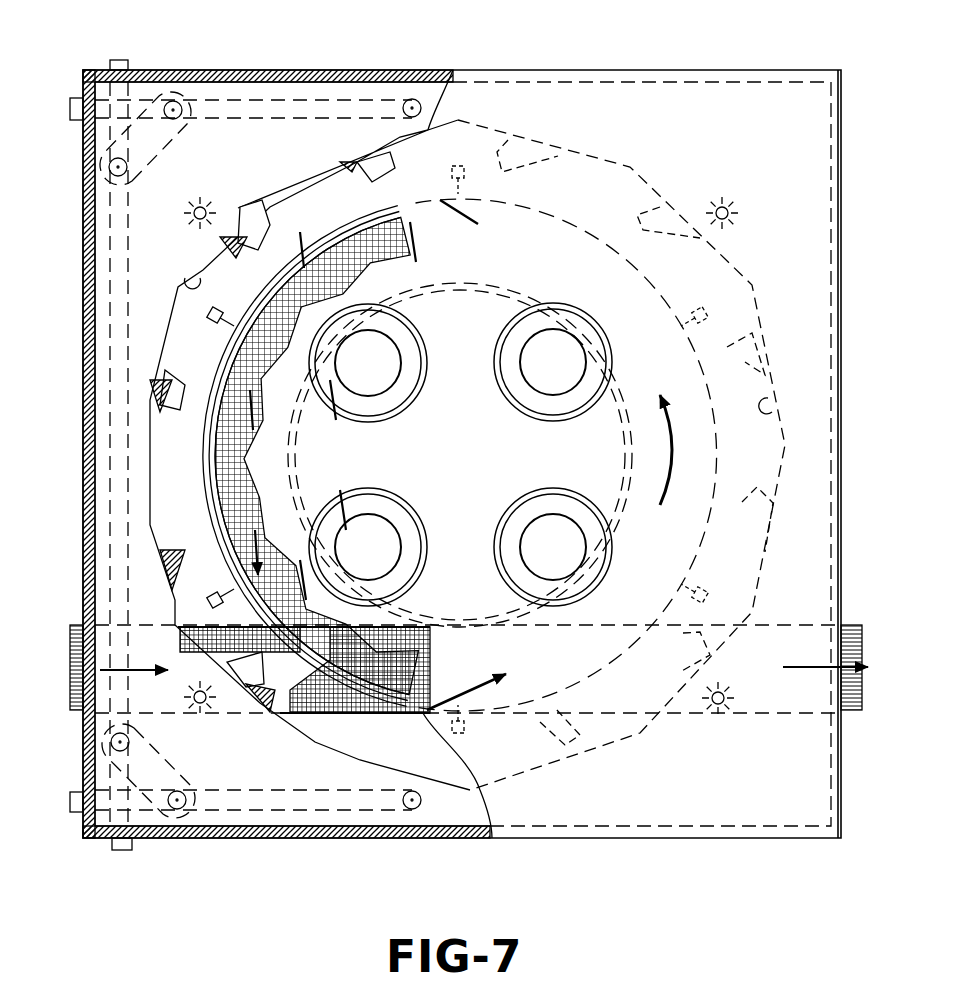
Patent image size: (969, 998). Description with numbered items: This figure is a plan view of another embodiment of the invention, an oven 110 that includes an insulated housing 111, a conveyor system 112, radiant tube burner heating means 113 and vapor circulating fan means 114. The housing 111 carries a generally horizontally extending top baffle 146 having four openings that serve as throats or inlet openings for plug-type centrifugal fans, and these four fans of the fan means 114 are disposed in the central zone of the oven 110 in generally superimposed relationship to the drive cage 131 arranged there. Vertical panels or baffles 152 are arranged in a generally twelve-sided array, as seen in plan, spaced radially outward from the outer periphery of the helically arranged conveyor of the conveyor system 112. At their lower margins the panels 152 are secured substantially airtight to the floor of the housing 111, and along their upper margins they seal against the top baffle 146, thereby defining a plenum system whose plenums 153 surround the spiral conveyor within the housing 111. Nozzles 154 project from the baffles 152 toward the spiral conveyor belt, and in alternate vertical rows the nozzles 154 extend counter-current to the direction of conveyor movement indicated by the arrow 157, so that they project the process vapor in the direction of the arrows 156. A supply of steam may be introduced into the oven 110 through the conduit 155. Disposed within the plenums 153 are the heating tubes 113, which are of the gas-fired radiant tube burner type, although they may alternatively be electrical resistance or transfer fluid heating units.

The oven 110 is at (757, 52).
The insulated housing 111 is at (346, 70).
The conveyor system 112 is at (300, 256).
The radiant tube burner heating means 113 is at (75, 812).
The vapor circulating fan means 114 is at (510, 384).
The drive cage 131 is at (452, 287).
The top baffle 146 is at (632, 297).
The vertical panels or baffles 152 is at (198, 268).
The plenums 153 is at (232, 190).
The nozzles 154 is at (255, 225).
The conduit 155 is at (196, 210).
The arrows indicating vapor projection direction 156 is at (445, 198).
The arrow indicating conveyor movement direction 157 is at (690, 453).